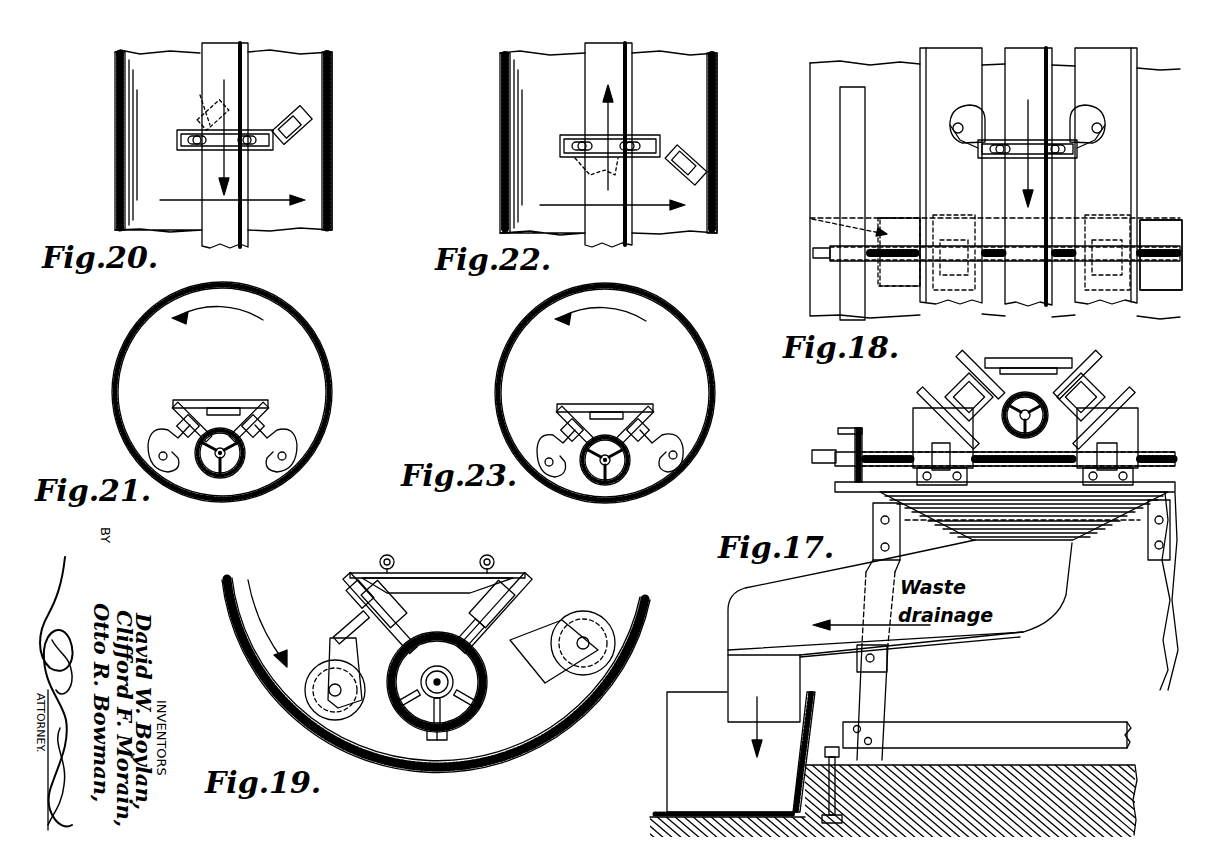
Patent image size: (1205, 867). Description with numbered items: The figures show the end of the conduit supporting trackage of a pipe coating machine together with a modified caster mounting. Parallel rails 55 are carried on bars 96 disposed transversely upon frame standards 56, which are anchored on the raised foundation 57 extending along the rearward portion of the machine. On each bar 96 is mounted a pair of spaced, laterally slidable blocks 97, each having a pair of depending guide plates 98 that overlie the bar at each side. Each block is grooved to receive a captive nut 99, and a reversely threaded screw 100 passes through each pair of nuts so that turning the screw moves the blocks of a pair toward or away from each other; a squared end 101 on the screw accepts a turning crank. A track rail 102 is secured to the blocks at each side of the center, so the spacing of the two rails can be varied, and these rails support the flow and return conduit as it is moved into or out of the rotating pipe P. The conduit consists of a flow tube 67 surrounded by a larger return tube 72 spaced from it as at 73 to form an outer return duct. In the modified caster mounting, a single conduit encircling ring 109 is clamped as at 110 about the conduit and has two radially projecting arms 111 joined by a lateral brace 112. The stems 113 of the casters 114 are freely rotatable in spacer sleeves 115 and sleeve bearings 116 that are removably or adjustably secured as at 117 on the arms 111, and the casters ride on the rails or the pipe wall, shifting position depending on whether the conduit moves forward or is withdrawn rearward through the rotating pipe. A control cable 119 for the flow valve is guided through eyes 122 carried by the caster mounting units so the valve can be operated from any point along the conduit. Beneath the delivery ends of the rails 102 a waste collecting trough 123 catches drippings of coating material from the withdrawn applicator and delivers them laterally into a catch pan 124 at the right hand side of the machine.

In FIG. 20, the rotating pipe P is at (115, 101).
In FIG. 22, the rotating pipe P is at (500, 98).
In FIG. 19, the rotating pipe P is at (237, 641).
In FIG. 21, the rotating pipe P is at (113, 390).
In FIG. 23, the rotating pipe P is at (497, 378).
In FIG. 18, the parallel rails 55 is at (840, 156).
In FIG. 17, the parallel rails 55 is at (857, 428).
In FIG. 18, the frame standards 56 is at (810, 218).
In FIG. 17, the frame standards 56 is at (1160, 588).
In FIG. 17, the raised foundation 57 is at (990, 765).
In FIG. 20, the flow tube 67 is at (248, 196).
In FIG. 22, the flow tube 67 is at (595, 188).
In FIG. 18, the flow tube 67 is at (1052, 105).
In FIG. 19, the flow tube 67 is at (455, 680).
In FIG. 21, the flow tube 67 is at (200, 475).
In FIG. 23, the flow tube 67 is at (612, 482).
In FIG. 19, the return tube 72 is at (468, 698).
In FIG. 19, the space 73 is at (452, 710).
In FIG. 21, the space 73 is at (218, 475).
In FIG. 23, the space 73 is at (600, 483).
In FIG. 18, the bars 96 is at (1165, 220).
In FIG. 17, the bars 96 is at (858, 492).
In FIG. 18, the laterally slidable blocks 97 is at (918, 218).
In FIG. 17, the laterally slidable blocks 97 is at (917, 410).
In FIG. 18, the depending guide plates 98 is at (960, 295).
In FIG. 17, the depending guide plates 98 is at (935, 480).
In FIG. 18, the captive nut 99 is at (945, 240).
In FIG. 17, the captive nut 99 is at (935, 450).
In FIG. 18, the reversely threaded screw 100 is at (870, 248).
In FIG. 17, the reversely threaded screw 100 is at (850, 452).
In FIG. 18, the squared end 101 is at (813, 253).
In FIG. 17, the squared end 101 is at (835, 460).
In FIG. 18, the track rail 102 is at (920, 80).
In FIG. 17, the track rail 102 is at (940, 378).
In FIG. 20, the conduit encircling ring 109 is at (236, 130).
In FIG. 22, the conduit encircling ring 109 is at (600, 145).
In FIG. 18, the conduit encircling ring 109 is at (1020, 152).
In FIG. 17, the conduit encircling ring 109 is at (1003, 418).
In FIG. 19, the conduit encircling ring 109 is at (448, 650).
In FIG. 21, the conduit encircling ring 109 is at (240, 470).
In FIG. 23, the conduit encircling ring 109 is at (628, 475).
In FIG. 19, the clamp 110 is at (437, 742).
In FIG. 20, the radially projecting arms 111 is at (177, 140).
In FIG. 22, the radially projecting arms 111 is at (658, 140).
In FIG. 18, the radially projecting arms 111 is at (1027, 141).
In FIG. 17, the radially projecting arms 111 is at (1072, 368).
In FIG. 19, the radially projecting arms 111 is at (343, 587).
In FIG. 21, the radially projecting arms 111 is at (180, 404).
In FIG. 23, the radially projecting arms 111 is at (565, 408).
In FIG. 20, the lateral brace 112 is at (183, 131).
In FIG. 22, the lateral brace 112 is at (632, 135).
In FIG. 18, the lateral brace 112 is at (1027, 149).
In FIG. 17, the lateral brace 112 is at (1030, 358).
In FIG. 19, the lateral brace 112 is at (452, 575).
In FIG. 21, the lateral brace 112 is at (228, 403).
In FIG. 23, the lateral brace 112 is at (598, 406).
In FIG. 19, the stems 113 is at (412, 567).
In FIG. 20, the casters 114 is at (210, 118).
In FIG. 22, the casters 114 is at (640, 172).
In FIG. 18, the casters 114 is at (950, 126).
In FIG. 17, the casters 114 is at (1100, 418).
In FIG. 19, the casters 114 is at (356, 706).
In FIG. 21, the casters 114 is at (140, 435).
In FIG. 23, the casters 114 is at (553, 478).
In FIG. 19, the spacer sleeves 115 is at (335, 624).
In FIG. 19, the sleeve bearings 116 is at (375, 582).
In FIG. 19, the securing means 117 is at (355, 575).
In FIG. 19, the control cable 119 is at (384, 555).
In FIG. 19, the eyes 122 is at (390, 556).
In FIG. 17, the waste collecting trough 123 is at (1040, 540).
In FIG. 17, the catch pan 124 is at (863, 677).